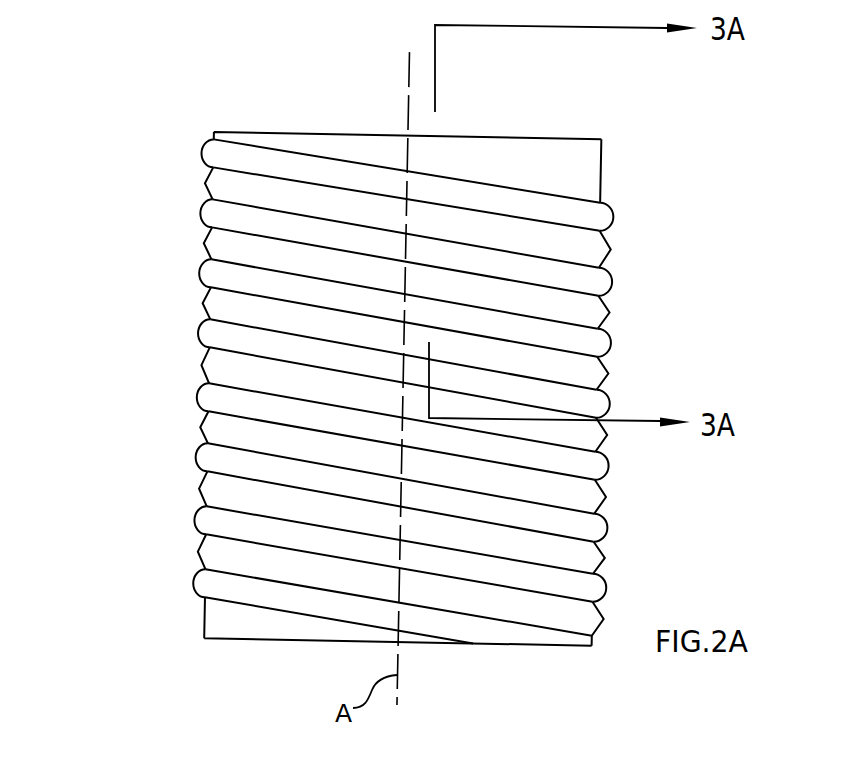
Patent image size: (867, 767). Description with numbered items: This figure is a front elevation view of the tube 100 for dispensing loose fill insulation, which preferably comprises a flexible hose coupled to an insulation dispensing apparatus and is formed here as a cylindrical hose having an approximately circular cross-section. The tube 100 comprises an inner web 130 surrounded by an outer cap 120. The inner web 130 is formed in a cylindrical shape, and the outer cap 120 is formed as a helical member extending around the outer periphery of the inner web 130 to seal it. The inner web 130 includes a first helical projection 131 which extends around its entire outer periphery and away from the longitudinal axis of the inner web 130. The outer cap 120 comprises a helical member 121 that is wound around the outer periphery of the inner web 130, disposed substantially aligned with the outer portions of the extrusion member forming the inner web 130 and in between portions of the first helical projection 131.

The tube 100 is at (225, 96).
The outer cap 120 is at (185, 148).
The helical member 121 is at (197, 397).
The inner web 130 is at (185, 181).
The first helical projection 131 is at (611, 316).